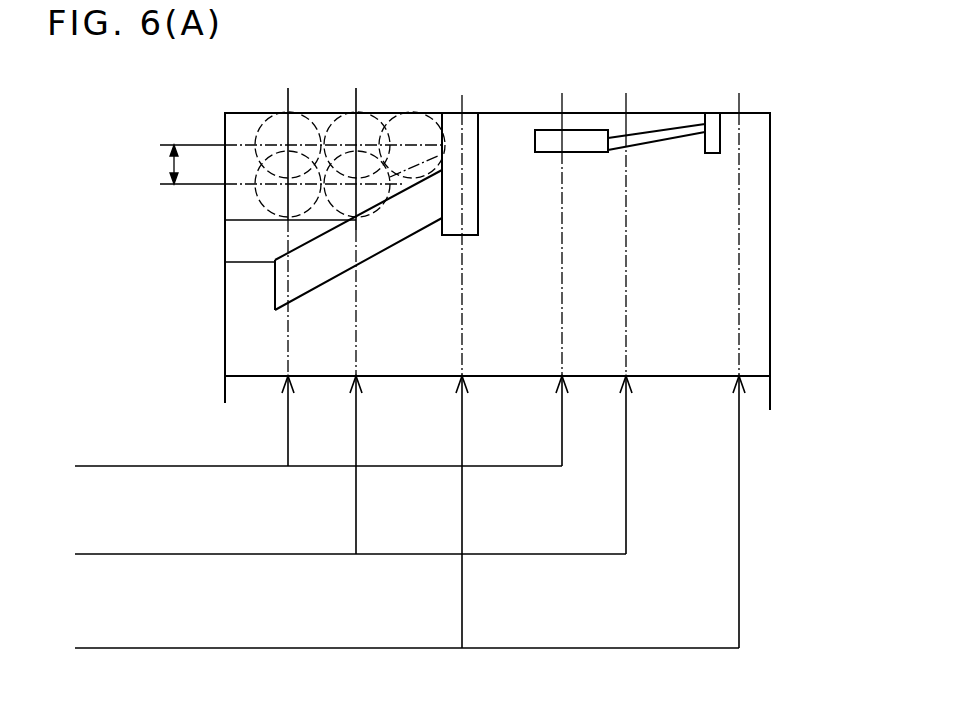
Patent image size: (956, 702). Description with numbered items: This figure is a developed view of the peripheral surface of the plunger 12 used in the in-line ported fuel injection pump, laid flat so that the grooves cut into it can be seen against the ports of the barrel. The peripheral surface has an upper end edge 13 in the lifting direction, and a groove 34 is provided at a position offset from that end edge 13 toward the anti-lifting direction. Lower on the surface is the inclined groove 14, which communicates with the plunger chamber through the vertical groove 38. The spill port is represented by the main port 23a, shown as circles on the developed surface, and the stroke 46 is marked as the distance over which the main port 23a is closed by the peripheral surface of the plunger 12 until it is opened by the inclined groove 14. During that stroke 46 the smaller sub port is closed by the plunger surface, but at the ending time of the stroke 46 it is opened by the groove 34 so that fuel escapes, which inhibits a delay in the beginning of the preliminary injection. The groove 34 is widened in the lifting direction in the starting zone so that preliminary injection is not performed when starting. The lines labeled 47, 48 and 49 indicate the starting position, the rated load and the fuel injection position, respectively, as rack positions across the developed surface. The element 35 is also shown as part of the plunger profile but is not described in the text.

The plunger 12 is at (755, 127).
The end edge 13 is at (590, 112).
The inclined groove 14 is at (385, 235).
The main port 23a is at (296, 128).
The groove 34 is at (665, 123).
The stepped support portion 35 is at (227, 243).
The vertical groove 38 is at (480, 200).
The stroke 46 is at (168, 167).
The starting position 47 is at (162, 467).
The rated load 48 is at (163, 554).
The fuel injection position 49 is at (167, 648).